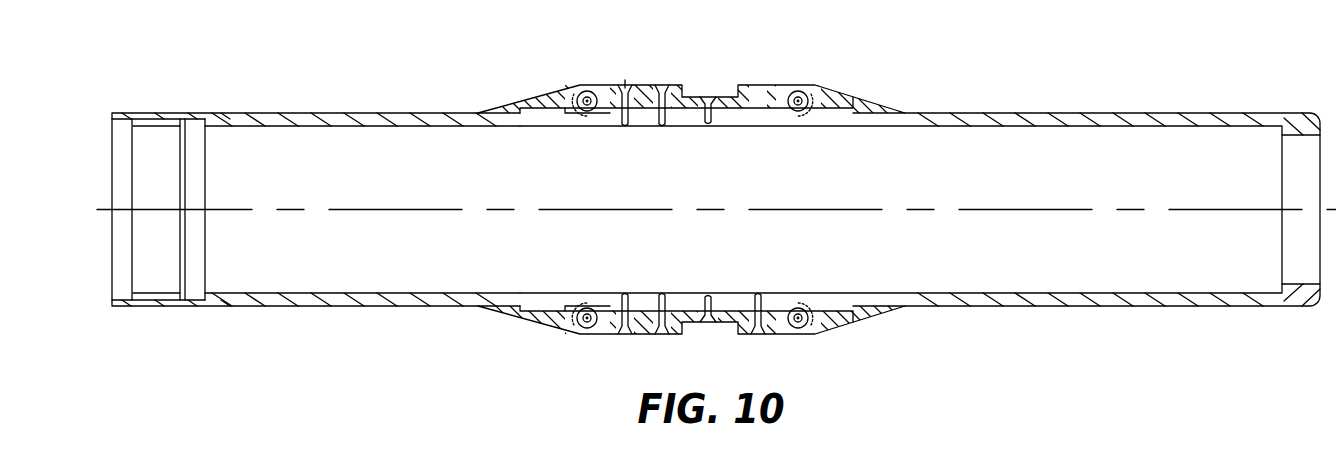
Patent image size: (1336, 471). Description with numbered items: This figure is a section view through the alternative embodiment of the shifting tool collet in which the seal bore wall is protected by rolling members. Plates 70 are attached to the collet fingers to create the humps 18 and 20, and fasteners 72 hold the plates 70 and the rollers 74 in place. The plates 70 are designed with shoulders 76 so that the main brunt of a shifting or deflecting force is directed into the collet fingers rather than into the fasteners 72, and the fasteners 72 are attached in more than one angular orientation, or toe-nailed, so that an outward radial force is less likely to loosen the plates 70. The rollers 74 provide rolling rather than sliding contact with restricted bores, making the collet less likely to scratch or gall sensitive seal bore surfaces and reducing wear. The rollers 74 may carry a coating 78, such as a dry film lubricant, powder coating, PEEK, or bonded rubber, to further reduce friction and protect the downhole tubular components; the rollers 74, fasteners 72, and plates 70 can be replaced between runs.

The hump 18 is at (528, 100).
The hump 20 is at (872, 103).
The plate 70 is at (770, 85).
The fastener 72 is at (630, 84).
The roller 74 is at (584, 92).
The shoulder 76 is at (573, 111).
The coating 78 is at (807, 332).